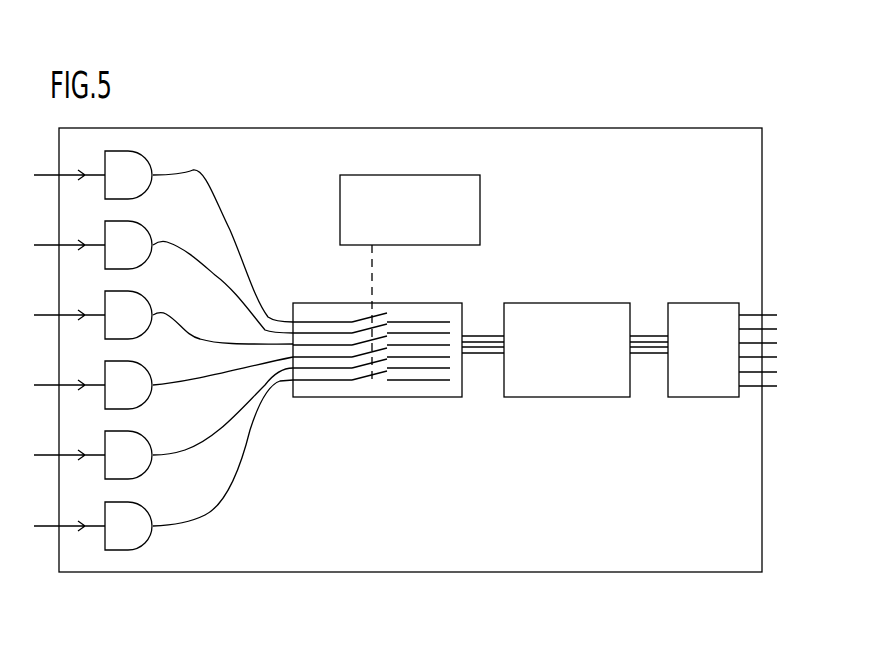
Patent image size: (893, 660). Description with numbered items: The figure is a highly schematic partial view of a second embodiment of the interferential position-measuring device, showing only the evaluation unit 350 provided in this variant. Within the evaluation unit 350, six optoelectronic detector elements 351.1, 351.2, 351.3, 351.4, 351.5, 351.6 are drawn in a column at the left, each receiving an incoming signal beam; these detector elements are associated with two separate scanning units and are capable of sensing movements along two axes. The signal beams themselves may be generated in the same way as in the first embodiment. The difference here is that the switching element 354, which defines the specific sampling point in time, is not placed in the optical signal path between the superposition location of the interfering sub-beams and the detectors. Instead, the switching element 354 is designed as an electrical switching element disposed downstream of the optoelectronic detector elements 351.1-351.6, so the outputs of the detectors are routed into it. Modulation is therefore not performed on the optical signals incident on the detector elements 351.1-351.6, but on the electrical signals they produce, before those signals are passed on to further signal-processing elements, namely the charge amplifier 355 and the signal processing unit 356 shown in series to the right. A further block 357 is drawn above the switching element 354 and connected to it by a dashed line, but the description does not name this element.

The evaluation unit 350 is at (558, 128).
The optoelectronic detector element 351.1 is at (138, 534).
The optoelectronic detector element 351.2 is at (138, 463).
The optoelectronic detector element 351.3 is at (138, 393).
The optoelectronic detector element 351.4 is at (138, 323).
The optoelectronic detector element 351.5 is at (138, 253).
The optoelectronic detector element 351.6 is at (138, 183).
The switching element 354 is at (412, 388).
The charge amplifier 355 is at (560, 317).
The signal processing unit 356 is at (702, 317).
The control unit 357 is at (470, 207).